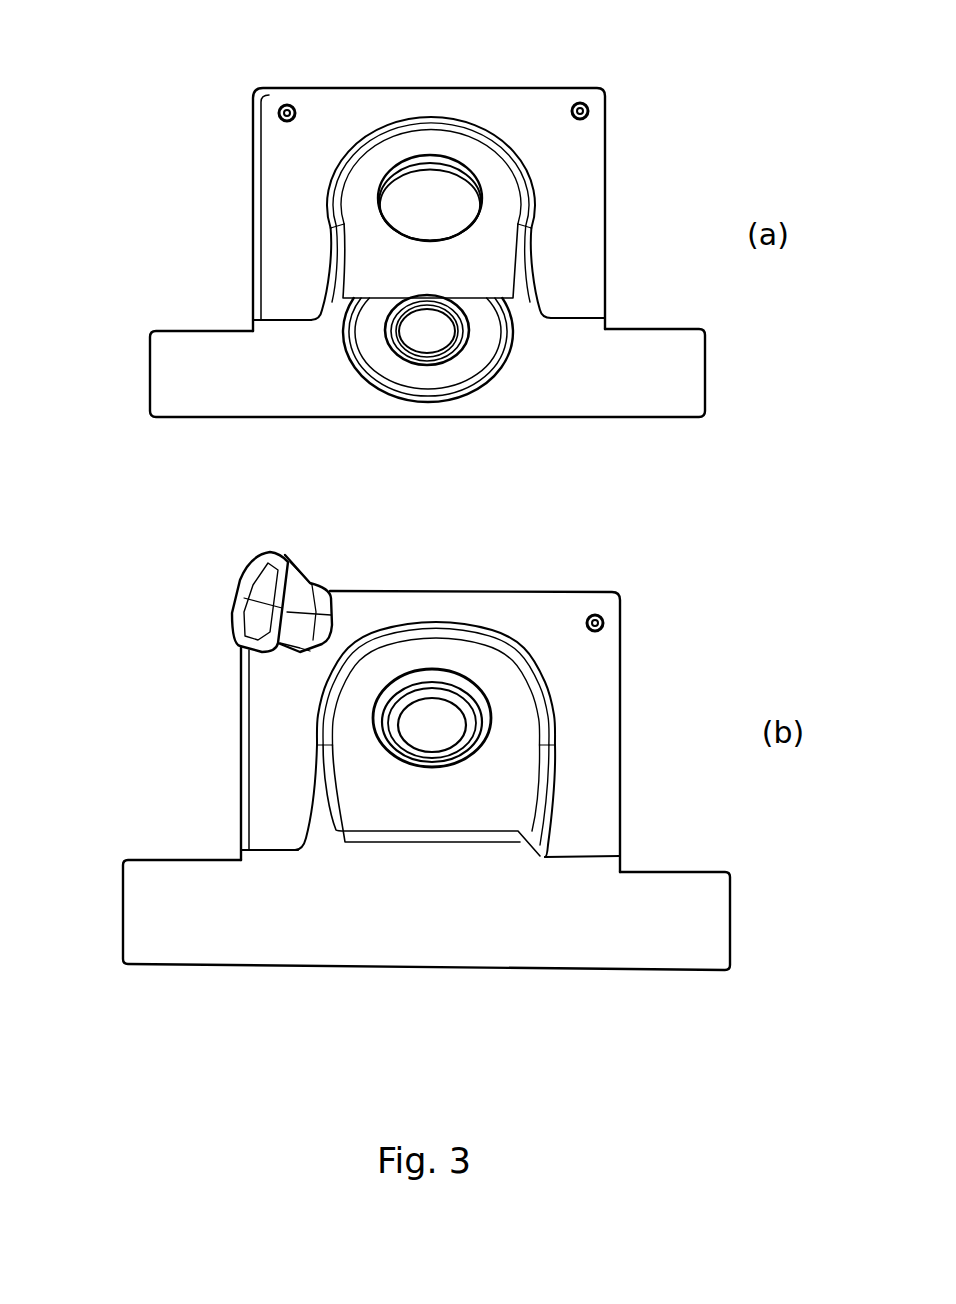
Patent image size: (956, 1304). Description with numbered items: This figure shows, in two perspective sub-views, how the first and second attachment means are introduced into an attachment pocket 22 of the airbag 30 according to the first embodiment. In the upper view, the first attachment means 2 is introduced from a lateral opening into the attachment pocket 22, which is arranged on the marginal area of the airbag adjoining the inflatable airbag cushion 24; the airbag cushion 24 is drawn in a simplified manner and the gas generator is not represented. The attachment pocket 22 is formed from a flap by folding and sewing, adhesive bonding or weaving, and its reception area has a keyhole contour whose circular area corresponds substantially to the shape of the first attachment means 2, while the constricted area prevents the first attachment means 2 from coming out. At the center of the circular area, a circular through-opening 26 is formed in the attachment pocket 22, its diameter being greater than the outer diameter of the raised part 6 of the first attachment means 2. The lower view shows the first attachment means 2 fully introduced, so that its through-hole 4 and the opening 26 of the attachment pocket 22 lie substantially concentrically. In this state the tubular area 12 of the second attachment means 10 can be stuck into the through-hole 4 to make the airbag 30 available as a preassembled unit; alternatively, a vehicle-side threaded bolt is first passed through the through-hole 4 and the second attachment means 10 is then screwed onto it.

The first attachment means 2 is at (504, 393).
The through-hole 4 is at (428, 744).
The raised part 6 is at (406, 358).
The second attachment means 10 is at (231, 560).
The tubular area 12 is at (297, 666).
The attachment pocket 22 is at (503, 157).
The airbag cushion 24 is at (688, 391).
The through-opening 26 is at (423, 193).
The airbag 30 is at (99, 664).